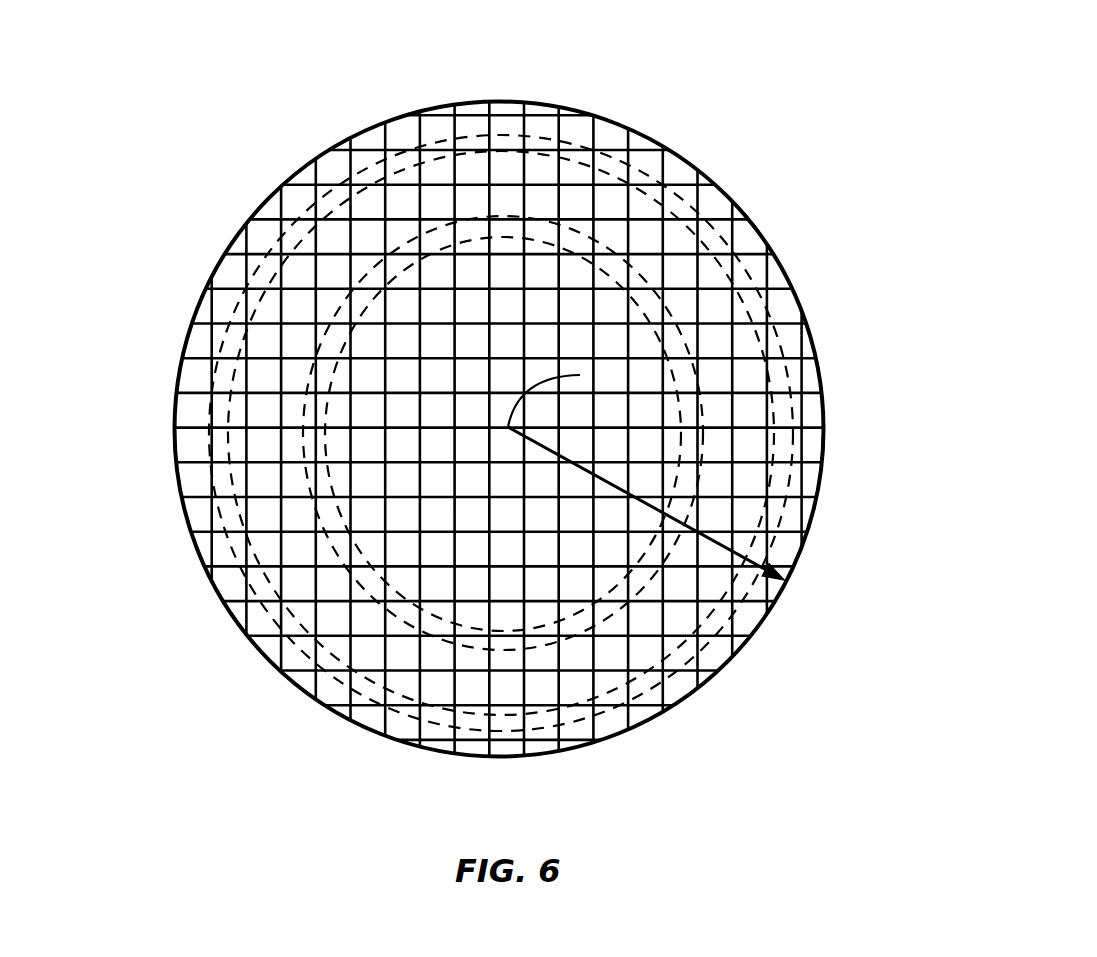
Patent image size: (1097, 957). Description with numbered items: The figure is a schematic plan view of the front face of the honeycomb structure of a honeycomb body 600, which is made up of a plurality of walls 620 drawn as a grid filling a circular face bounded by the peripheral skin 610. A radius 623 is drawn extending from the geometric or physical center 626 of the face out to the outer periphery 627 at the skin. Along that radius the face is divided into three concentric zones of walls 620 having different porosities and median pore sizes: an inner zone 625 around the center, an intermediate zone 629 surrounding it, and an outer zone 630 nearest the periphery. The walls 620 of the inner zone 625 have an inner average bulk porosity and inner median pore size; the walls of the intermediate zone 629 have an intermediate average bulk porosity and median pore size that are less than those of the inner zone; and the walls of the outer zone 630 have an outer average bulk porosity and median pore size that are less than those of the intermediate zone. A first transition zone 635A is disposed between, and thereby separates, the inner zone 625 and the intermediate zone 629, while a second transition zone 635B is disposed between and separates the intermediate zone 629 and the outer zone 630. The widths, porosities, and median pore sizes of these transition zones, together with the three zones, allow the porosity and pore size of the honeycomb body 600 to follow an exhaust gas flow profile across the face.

The honeycomb body 600 is at (668, 96).
The peripheral skin 610 is at (186, 333).
The walls 620 is at (377, 148).
The outer zone 630 is at (690, 165).
The intermediate zone 629 is at (462, 433).
The inner zone 625 is at (573, 338).
The center 626 is at (580, 375).
The radius 623 is at (747, 559).
The outer periphery 627 is at (782, 596).
The first transition zone 635A is at (308, 444).
The second transition zone 635B is at (232, 548).